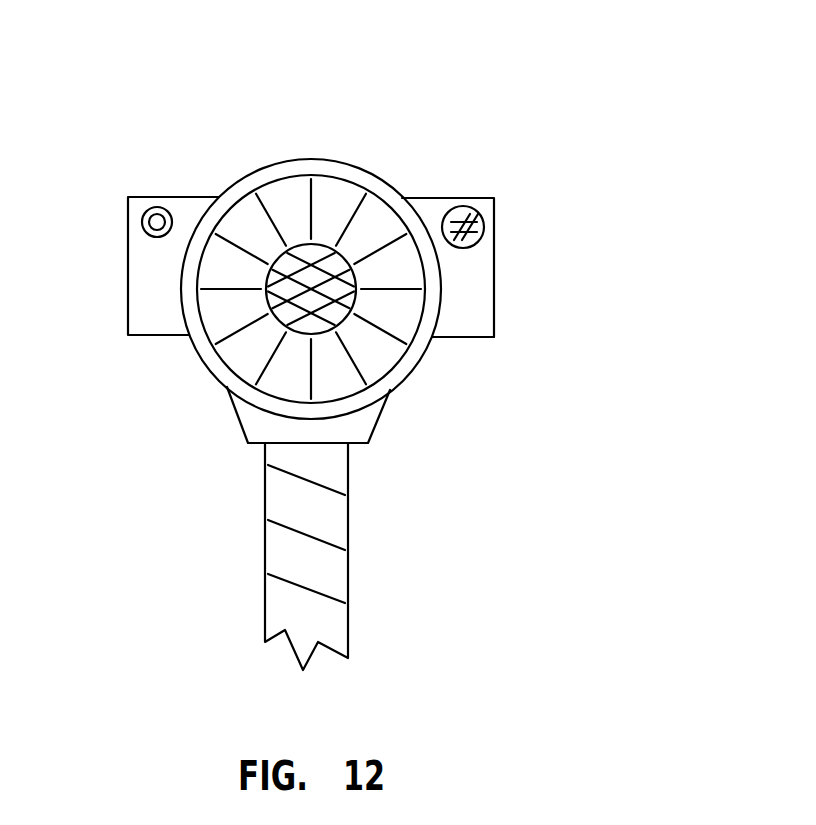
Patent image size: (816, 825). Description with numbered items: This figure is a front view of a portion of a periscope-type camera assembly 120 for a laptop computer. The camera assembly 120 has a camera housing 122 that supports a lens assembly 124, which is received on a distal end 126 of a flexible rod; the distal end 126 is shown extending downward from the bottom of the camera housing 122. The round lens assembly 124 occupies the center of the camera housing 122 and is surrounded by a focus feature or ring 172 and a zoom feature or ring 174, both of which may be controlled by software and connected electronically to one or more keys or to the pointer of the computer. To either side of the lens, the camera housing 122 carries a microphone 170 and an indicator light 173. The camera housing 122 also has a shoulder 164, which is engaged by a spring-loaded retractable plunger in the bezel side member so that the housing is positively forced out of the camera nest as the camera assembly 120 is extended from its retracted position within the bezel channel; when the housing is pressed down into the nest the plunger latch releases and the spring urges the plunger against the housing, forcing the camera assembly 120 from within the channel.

The camera assembly 120 is at (313, 115).
The camera housing 122 is at (430, 197).
The lens assembly 124 is at (275, 300).
The distal end 126 is at (330, 578).
The shoulder 164 is at (462, 338).
The microphone 170 is at (480, 222).
The focus ring 172 is at (393, 380).
The indicator light 173 is at (152, 222).
The zoom ring 174 is at (442, 293).